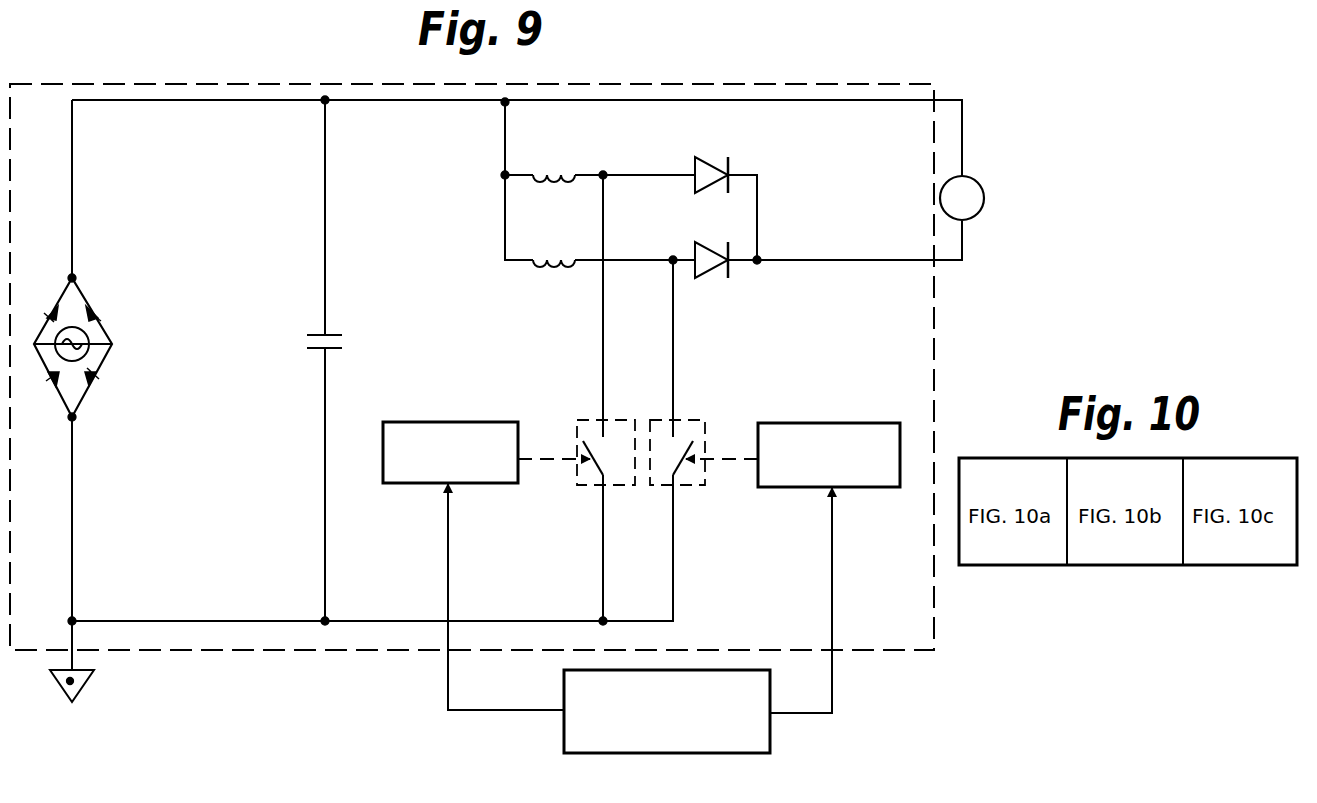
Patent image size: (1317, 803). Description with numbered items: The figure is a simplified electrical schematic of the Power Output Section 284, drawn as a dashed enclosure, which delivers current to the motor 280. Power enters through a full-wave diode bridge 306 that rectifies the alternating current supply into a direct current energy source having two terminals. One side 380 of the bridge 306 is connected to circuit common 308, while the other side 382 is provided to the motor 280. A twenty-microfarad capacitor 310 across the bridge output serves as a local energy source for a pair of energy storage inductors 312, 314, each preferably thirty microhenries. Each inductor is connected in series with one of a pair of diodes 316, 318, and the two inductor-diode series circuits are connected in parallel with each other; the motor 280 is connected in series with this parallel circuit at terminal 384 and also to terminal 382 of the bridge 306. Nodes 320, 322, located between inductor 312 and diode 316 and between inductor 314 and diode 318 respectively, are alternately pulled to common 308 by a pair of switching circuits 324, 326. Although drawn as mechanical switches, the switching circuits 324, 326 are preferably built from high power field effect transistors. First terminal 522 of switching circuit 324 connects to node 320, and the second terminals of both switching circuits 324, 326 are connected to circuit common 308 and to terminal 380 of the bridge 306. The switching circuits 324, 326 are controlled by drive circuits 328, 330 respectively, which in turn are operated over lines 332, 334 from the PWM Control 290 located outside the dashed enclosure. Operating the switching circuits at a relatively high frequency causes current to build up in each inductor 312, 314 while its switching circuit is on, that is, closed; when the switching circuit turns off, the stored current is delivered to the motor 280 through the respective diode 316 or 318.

The motor 280 is at (984, 205).
The Power Output Section 284 is at (316, 652).
The PWM Control 290 is at (770, 735).
The full-wave diode bridge 306 is at (108, 300).
The circuit common 308 is at (72, 621).
The capacitor 310 is at (330, 335).
The energy storage inductor 312 is at (565, 186).
The energy storage inductor 314 is at (577, 265).
The diode 316 is at (713, 165).
The diode 318 is at (705, 275).
The node 320 is at (603, 175).
The node 322 is at (673, 260).
The switching circuit 324 is at (580, 420).
The switching circuit 326 is at (692, 420).
The drive circuit 328 is at (462, 422).
The drive circuit 330 is at (838, 423).
The line 332 is at (448, 540).
The line 334 is at (832, 562).
The side of bridge 380 is at (72, 495).
The side of bridge 382 is at (72, 233).
The terminal 384 is at (789, 260).
The first terminal 522 is at (607, 308).